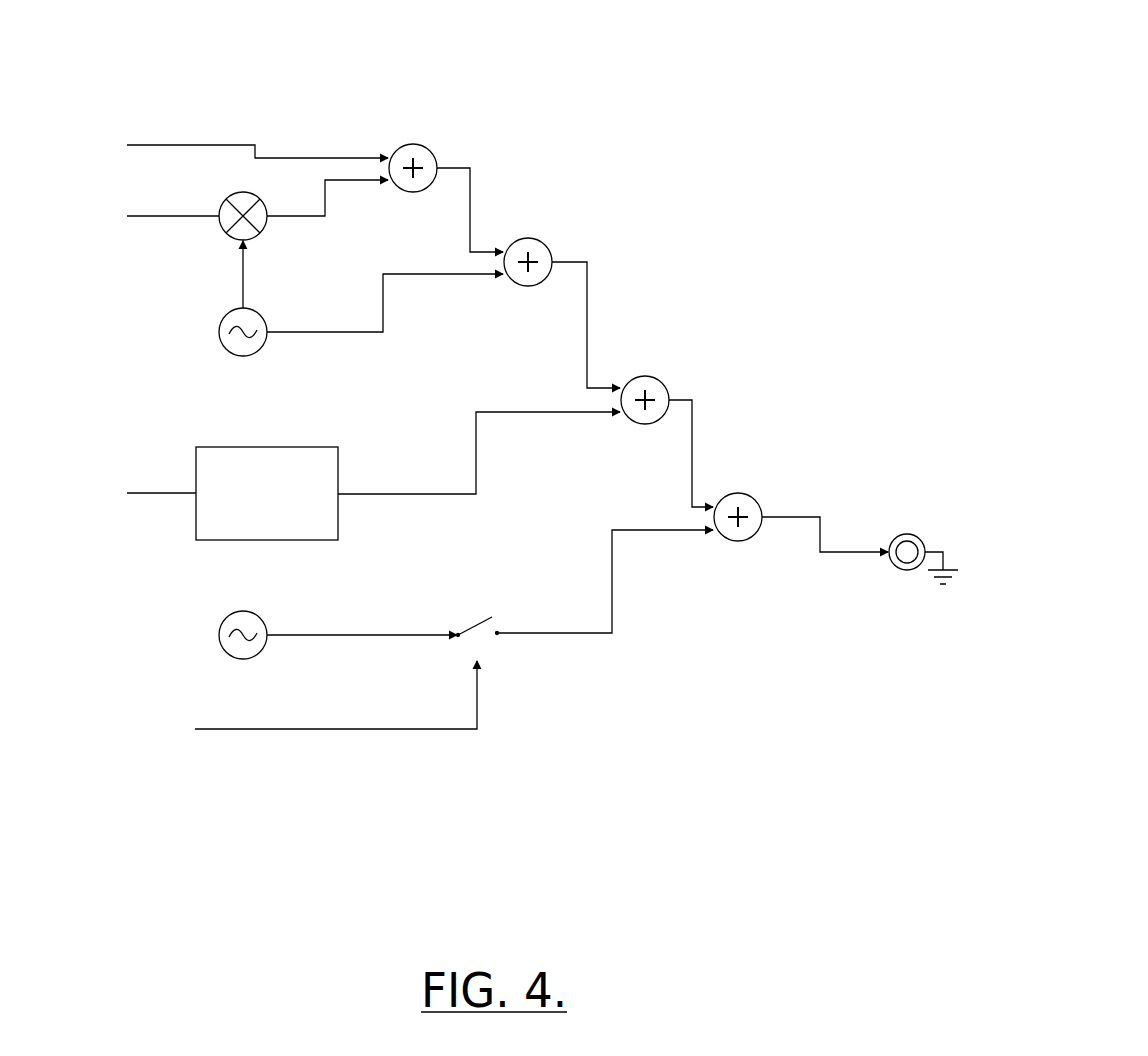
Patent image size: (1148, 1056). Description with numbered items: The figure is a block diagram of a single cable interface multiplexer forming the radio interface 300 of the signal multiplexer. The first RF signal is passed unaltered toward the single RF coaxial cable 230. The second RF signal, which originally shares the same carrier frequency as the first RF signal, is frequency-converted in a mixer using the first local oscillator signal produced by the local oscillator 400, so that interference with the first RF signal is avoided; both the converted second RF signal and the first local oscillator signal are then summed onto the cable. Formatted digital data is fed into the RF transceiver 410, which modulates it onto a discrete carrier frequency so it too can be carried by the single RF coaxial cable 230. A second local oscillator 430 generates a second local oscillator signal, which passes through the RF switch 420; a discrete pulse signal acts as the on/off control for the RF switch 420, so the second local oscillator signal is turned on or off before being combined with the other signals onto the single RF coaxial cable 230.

The radio interface 300 is at (727, 80).
The local oscillator 400 is at (262, 314).
The RF transceiver 410 is at (301, 441).
The RF switch 420 is at (499, 667).
The second local oscillator 430 is at (221, 628).
The single RF coaxial cable 230 is at (902, 560).